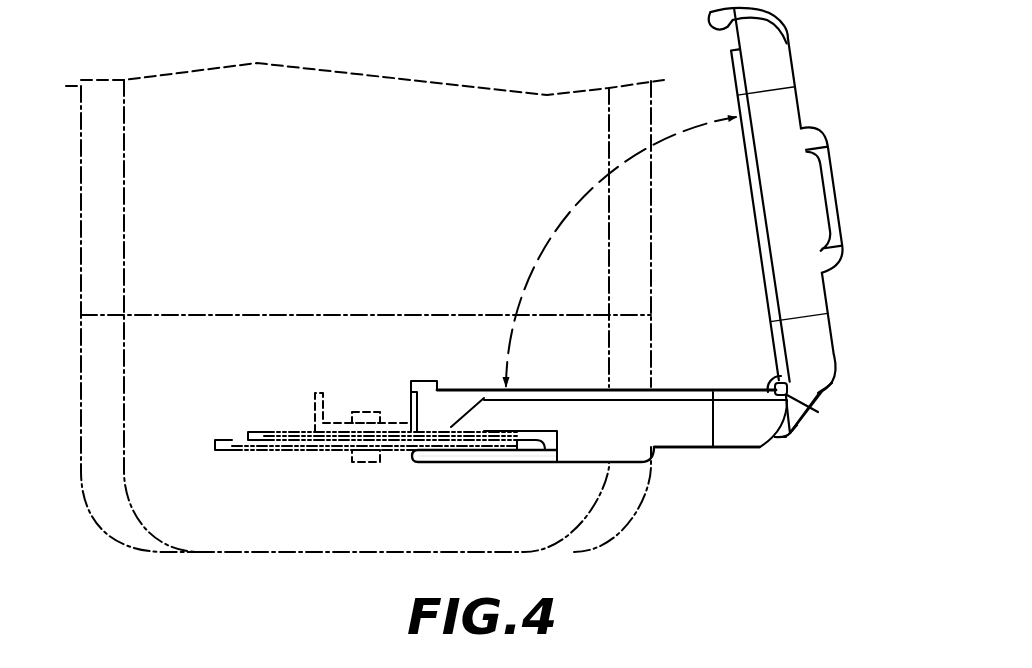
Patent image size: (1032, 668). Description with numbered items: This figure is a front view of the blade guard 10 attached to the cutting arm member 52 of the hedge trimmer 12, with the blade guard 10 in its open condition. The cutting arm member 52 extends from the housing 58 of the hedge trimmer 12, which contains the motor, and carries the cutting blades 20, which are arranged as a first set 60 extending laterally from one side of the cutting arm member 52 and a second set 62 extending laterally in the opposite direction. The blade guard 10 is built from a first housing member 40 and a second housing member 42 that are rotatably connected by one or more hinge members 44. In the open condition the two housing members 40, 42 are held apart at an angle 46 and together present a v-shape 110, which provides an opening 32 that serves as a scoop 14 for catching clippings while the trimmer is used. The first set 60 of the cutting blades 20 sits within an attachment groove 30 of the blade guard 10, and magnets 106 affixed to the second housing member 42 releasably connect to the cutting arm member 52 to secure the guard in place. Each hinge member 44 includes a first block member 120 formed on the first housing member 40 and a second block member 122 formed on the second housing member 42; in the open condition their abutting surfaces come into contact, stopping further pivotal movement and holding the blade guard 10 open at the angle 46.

The blade guard 10 is at (738, 463).
The hedge trimmer 12 is at (358, 207).
The scoop 14 is at (709, 315).
The cutting blades 20 is at (229, 393).
The attachment groove 30 is at (527, 436).
The opening 32 is at (695, 376).
The first housing member 40 is at (788, 115).
The second housing member 42 is at (668, 431).
The hinge members 44 is at (827, 419).
The angle 46 is at (556, 222).
The cutting arm member 52 is at (343, 398).
The housing 58 is at (122, 539).
The first set of the cutting blades 60 is at (446, 464).
The second set of the cutting blades 62 is at (294, 470).
The magnets 106 is at (755, 293).
The v-shape 110 is at (729, 299).
The first block member 120 is at (817, 393).
The second block member 122 is at (797, 425).